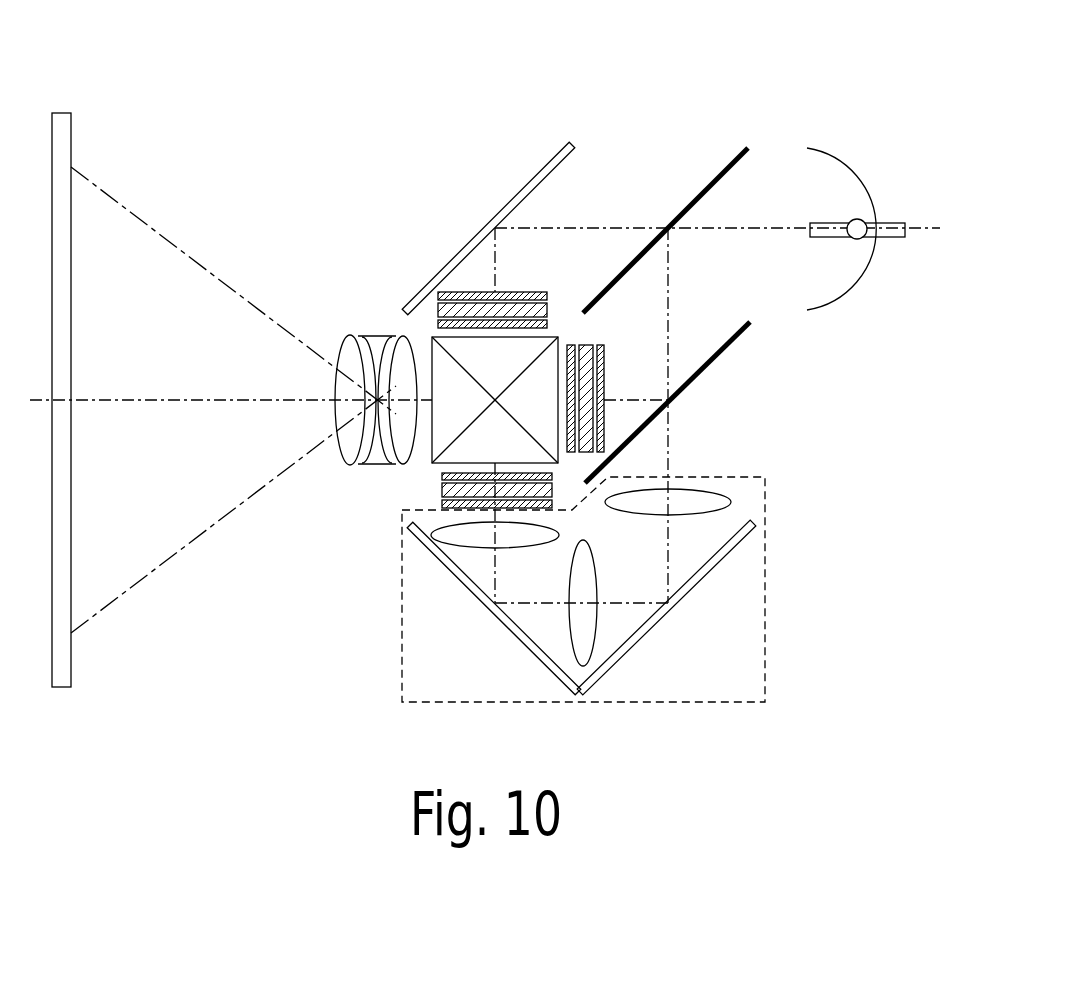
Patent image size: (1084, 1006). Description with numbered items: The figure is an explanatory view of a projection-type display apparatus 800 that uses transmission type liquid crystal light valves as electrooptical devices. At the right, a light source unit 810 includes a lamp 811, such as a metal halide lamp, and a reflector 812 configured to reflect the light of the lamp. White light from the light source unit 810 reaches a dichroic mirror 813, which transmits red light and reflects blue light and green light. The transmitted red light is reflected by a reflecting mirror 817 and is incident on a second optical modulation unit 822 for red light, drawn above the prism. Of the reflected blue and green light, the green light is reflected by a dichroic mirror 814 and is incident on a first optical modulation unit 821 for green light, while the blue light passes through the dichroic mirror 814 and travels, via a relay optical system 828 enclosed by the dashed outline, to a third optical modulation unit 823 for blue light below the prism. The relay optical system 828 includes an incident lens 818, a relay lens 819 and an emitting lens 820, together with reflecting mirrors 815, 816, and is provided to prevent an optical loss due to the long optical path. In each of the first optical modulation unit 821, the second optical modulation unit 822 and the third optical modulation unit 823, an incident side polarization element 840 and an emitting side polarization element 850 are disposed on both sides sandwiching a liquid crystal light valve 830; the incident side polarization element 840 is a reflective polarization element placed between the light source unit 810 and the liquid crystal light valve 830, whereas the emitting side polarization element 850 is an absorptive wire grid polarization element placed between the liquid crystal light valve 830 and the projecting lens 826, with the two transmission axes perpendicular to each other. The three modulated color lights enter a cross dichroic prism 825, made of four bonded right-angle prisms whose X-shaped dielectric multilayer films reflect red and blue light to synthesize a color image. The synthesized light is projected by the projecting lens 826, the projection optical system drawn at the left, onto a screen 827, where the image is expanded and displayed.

The projection-type display apparatus 800 is at (780, 87).
The light source unit 810 is at (872, 223).
The lamp 811 is at (847, 224).
The reflector 812 is at (861, 180).
The dichroic mirror 813 is at (722, 174).
The dichroic mirror 814 is at (709, 352).
The reflecting mirror 815 is at (653, 633).
The reflecting mirror 816 is at (515, 638).
The reflecting mirror 817 is at (538, 175).
The incident lens 818 is at (700, 495).
The relay lens 819 is at (592, 568).
The emitting lens 820 is at (528, 538).
The first optical modulation unit 821 is at (608, 336).
The second optical modulation unit 822 is at (418, 240).
The third optical modulation unit 823 is at (430, 488).
The cross dichroic prism 825 is at (552, 331).
The projecting lens 826 is at (420, 468).
The screen 827 is at (65, 113).
The relay optical system 828 is at (630, 565).
The liquid crystal light valve 830 is at (440, 310).
The incident side polarization element 840 is at (460, 292).
The emitting side polarization element 850 is at (440, 325).